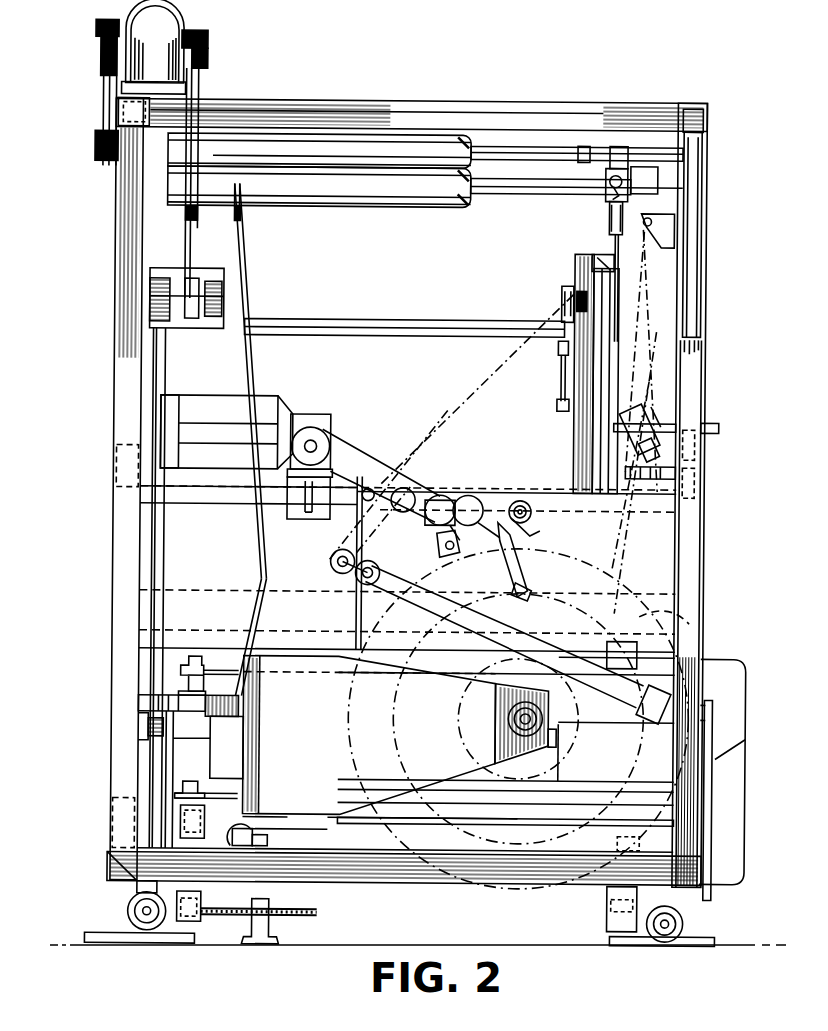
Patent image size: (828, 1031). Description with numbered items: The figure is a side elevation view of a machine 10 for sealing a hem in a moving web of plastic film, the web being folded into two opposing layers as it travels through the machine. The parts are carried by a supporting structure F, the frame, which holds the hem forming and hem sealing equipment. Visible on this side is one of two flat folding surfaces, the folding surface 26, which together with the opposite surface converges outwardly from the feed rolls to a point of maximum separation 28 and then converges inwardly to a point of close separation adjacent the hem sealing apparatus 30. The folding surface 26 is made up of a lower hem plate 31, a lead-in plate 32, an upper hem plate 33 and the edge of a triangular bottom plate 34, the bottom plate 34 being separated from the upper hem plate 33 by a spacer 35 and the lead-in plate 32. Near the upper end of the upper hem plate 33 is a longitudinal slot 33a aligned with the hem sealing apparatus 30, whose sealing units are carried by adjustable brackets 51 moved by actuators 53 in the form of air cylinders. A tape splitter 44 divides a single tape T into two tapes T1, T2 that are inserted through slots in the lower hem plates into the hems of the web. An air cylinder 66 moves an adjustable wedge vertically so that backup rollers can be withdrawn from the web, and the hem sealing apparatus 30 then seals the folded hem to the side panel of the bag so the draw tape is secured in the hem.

The machine 10 is at (58, 431).
The supporting structure F is at (128, 382).
The folding surface 26 is at (650, 652).
The point of maximum separation 28 is at (278, 590).
The hem sealing apparatus 30 is at (642, 279).
The lower hem plate 31 is at (640, 623).
The lead-in plate 32 is at (250, 622).
The upper hem plate 33 is at (576, 452).
The longitudinal slot 33a is at (597, 253).
The bottom plate 34 is at (250, 528).
The spacer 35 is at (376, 332).
The tape splitter 44 is at (662, 418).
The adjustable bracket 51 is at (616, 300).
The actuator 53 is at (603, 206).
The air cylinder 66 is at (556, 348).
The tape T is at (652, 378).
The tape T1 is at (615, 522).
The tape T2 is at (640, 548).